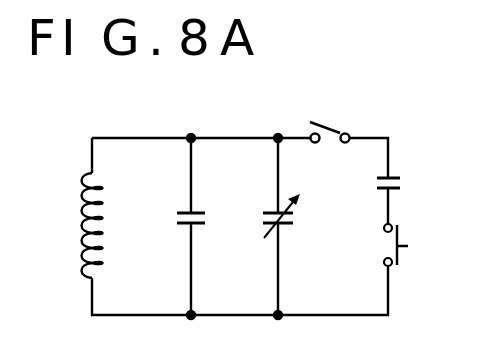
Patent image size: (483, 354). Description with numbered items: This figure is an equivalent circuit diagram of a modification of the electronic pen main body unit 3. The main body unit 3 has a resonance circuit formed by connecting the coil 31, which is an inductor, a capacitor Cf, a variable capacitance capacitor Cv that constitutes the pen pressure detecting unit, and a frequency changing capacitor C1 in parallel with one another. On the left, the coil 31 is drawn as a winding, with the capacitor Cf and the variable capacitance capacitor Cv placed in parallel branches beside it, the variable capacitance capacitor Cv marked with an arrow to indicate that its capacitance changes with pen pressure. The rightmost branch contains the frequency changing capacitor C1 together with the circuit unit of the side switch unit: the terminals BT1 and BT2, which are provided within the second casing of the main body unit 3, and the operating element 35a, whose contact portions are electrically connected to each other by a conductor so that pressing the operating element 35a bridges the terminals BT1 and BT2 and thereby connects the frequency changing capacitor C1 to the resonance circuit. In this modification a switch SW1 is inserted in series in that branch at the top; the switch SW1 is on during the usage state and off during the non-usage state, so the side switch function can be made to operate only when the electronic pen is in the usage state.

The coil 31 is at (79, 215).
The capacitor Cf is at (175, 218).
The variable capacitance capacitor Cv is at (261, 213).
The switch SW1 is at (331, 124).
The frequency changing capacitor C1 is at (402, 186).
The terminal BT1 is at (384, 229).
The terminal BT2 is at (384, 264).
The operating element 35a is at (400, 262).
The electronic pen main body unit 3 is at (473, 222).